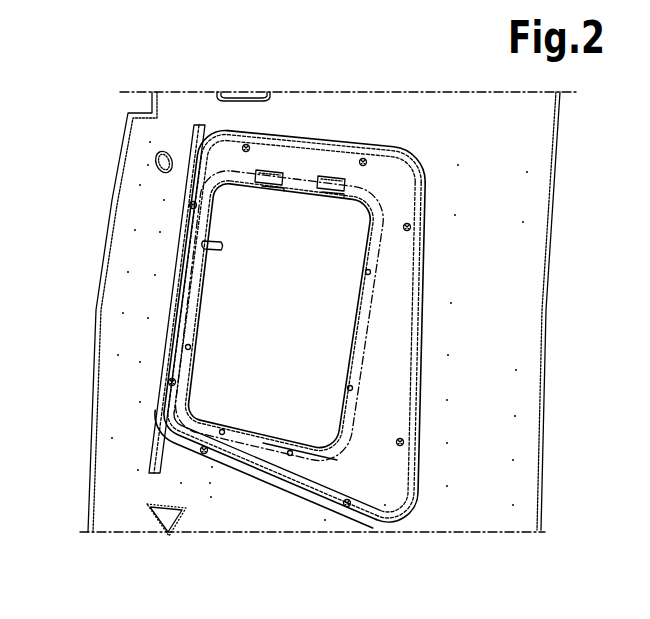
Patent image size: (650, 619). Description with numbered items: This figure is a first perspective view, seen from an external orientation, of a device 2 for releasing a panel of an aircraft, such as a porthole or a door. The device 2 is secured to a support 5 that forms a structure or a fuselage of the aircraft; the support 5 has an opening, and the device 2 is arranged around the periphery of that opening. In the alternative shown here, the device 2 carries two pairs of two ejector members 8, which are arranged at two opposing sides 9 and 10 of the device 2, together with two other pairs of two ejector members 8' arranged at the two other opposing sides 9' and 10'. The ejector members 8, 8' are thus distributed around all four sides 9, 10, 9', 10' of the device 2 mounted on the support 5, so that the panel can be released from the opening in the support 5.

The device 2 is at (293, 137).
The support 5 is at (483, 192).
The ejector members 8 is at (258, 306).
The ejector members 8' is at (310, 314).
The side 9 is at (482, 352).
The side 9' is at (267, 501).
The side 10 is at (114, 299).
The side 10' is at (326, 104).